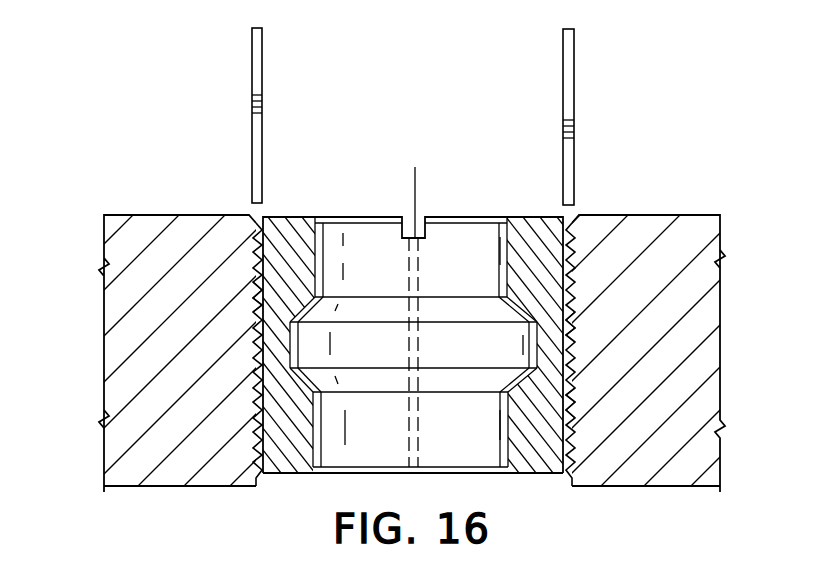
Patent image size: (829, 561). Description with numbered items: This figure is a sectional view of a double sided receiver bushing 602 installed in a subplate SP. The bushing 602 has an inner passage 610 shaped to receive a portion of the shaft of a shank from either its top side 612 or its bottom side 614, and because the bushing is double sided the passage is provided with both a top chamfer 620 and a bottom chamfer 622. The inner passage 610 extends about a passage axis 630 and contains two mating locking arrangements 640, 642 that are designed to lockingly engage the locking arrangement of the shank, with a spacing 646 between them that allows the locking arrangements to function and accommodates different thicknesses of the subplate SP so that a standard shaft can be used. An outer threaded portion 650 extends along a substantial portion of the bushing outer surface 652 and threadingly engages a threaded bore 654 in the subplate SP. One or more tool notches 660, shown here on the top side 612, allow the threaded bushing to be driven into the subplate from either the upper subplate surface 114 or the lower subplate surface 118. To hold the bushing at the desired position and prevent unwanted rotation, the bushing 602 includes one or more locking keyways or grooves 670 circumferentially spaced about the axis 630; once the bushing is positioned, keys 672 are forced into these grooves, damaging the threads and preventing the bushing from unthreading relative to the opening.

The upper subplate surface 114 is at (165, 215).
The lower subplate surface 118 is at (165, 486).
The subplate SP is at (136, 210).
The receiver bushing 602 is at (305, 182).
The inner passage 610 is at (371, 222).
The top side 612 is at (537, 217).
The bottom side 614 is at (282, 474).
The top chamfer 620 is at (320, 217).
The bottom chamfer 622 is at (515, 474).
The passage axis 630 is at (415, 167).
The locking arrangement 640 is at (532, 319).
The locking arrangement 642 is at (520, 381).
The spacing 646 is at (523, 344).
The outer threaded portion 650 is at (576, 406).
The bushing outer surface 652 is at (253, 295).
The threaded bore 654 is at (576, 333).
The tool notch 660 is at (407, 215).
The locking keyway 670 is at (252, 246).
The key 672 is at (258, 70).